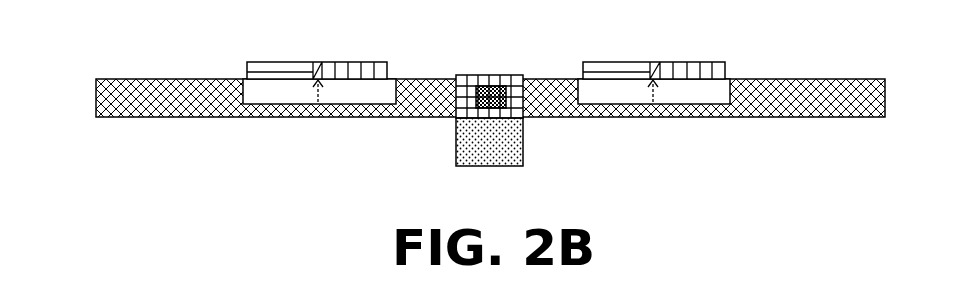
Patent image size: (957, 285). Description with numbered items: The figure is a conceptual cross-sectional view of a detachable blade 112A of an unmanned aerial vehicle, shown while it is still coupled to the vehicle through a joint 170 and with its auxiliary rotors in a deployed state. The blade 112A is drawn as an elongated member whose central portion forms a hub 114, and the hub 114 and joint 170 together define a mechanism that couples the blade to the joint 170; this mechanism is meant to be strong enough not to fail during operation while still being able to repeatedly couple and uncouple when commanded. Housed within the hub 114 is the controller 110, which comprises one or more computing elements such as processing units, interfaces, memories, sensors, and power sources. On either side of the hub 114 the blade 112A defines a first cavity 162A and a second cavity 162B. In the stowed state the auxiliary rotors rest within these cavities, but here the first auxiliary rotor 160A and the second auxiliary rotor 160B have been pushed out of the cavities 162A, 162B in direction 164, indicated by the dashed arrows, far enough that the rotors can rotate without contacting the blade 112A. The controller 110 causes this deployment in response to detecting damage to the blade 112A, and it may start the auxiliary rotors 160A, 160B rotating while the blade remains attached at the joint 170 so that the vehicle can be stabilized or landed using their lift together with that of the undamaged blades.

The blade 112A is at (137, 78).
The auxiliary rotor 160A is at (281, 67).
The auxiliary rotor 160B is at (682, 68).
The cavity 162A is at (270, 93).
The cavity 162B is at (717, 100).
The direction 164 is at (323, 98).
The controller 110 is at (478, 86).
The hub 114 is at (517, 77).
The joint 170 is at (458, 166).